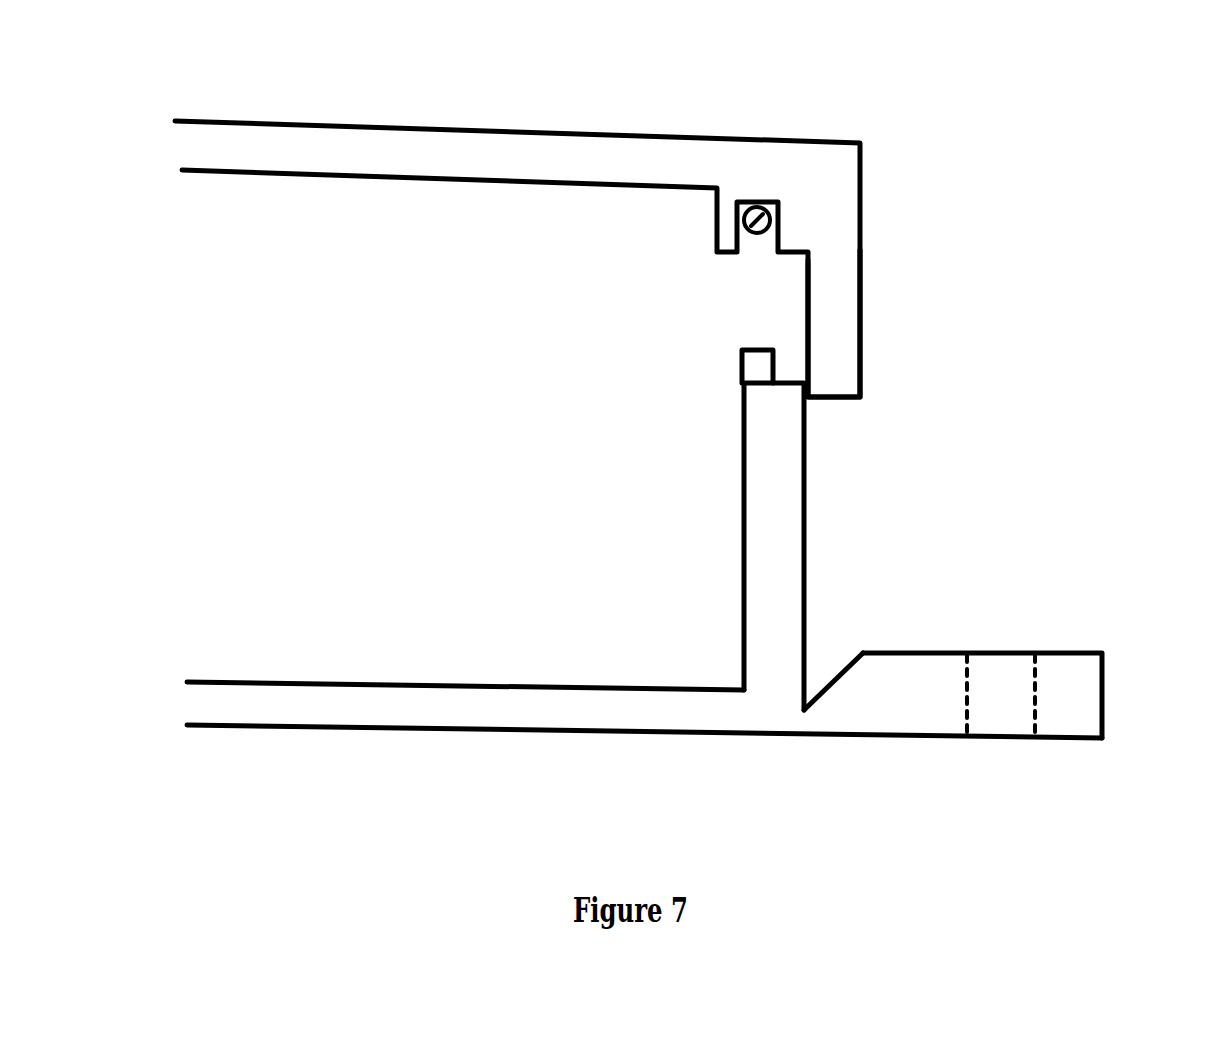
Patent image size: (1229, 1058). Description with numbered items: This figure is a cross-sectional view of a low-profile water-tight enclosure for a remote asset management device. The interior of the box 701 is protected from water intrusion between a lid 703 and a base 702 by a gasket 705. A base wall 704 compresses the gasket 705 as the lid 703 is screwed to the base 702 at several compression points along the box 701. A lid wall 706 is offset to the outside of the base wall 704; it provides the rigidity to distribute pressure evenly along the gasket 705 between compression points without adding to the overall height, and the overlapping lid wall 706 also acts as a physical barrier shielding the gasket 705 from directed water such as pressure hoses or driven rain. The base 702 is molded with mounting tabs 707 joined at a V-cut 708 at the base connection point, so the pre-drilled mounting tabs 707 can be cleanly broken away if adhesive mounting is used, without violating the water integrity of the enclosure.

The box 701 is at (337, 415).
The base 702 is at (668, 705).
The lid 703 is at (565, 160).
The base wall 704 is at (763, 453).
The gasket 705 is at (776, 205).
The lid wall 706 is at (830, 358).
The mounting tabs 707 is at (1052, 698).
The V-cut 708 is at (823, 658).